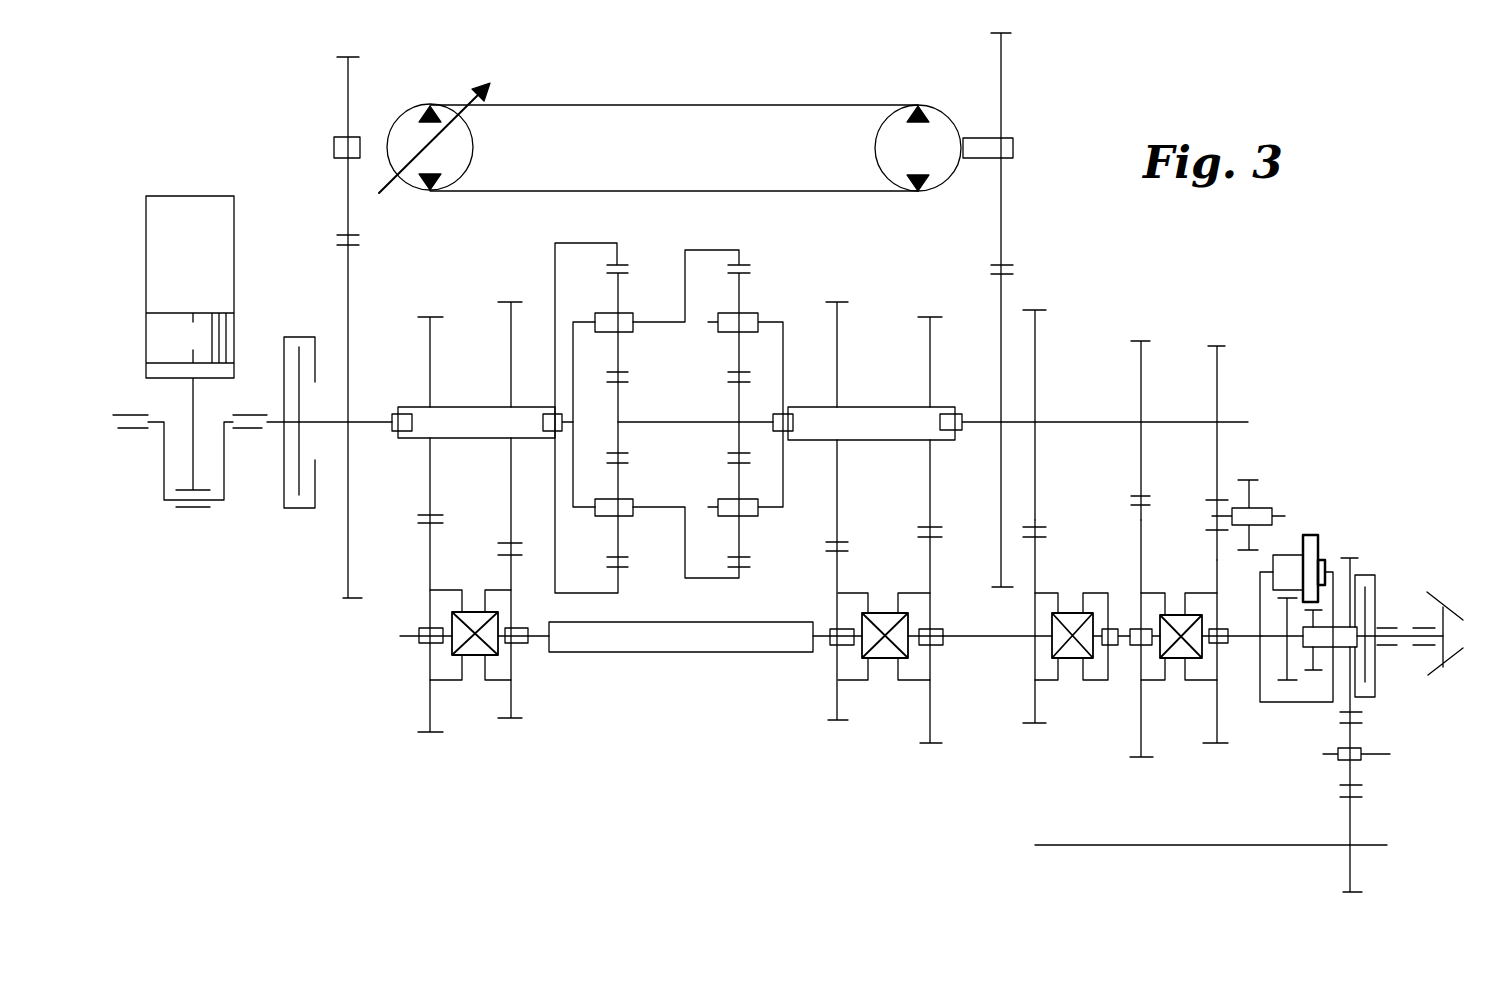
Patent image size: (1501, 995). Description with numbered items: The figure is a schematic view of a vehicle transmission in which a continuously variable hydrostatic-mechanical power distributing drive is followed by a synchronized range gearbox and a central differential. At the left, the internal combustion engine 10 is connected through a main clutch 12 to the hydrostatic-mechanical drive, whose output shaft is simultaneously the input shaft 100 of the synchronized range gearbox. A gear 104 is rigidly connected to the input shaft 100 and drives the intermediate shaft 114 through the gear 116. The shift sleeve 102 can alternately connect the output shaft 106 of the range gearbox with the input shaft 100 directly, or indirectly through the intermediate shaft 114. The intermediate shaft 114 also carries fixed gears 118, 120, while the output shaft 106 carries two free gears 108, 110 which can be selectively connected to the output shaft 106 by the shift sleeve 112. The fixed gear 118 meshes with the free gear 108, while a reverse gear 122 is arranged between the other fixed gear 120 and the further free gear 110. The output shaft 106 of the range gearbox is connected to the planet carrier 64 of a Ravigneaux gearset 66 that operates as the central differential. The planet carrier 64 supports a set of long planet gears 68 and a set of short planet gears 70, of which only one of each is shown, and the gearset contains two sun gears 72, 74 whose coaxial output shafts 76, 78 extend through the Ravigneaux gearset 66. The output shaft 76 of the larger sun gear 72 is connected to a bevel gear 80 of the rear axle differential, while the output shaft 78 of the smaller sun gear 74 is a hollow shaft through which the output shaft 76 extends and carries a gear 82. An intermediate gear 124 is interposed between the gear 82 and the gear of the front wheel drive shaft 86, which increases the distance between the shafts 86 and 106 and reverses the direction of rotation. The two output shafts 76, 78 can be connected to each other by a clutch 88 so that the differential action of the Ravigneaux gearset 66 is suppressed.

The internal combustion engine 10 is at (196, 208).
The main clutch 12 is at (307, 498).
The planet carrier 64 is at (1322, 700).
The Ravigneaux gearset 66 is at (1340, 533).
The long planet gear 68 is at (1282, 580).
The short planet gear 70 is at (1313, 535).
The larger sun gear 72 is at (1286, 657).
The smaller sun gear 74 is at (1300, 698).
The output shaft 76 is at (1406, 642).
The output shaft 78 is at (1366, 598).
The bevel gear 80 is at (1445, 672).
The gear 82 is at (1352, 573).
The front wheel drive shaft 86 is at (1163, 848).
The clutch 88 is at (1367, 688).
The input shaft 100 is at (1013, 640).
The shift sleeve 102 is at (1072, 660).
The gear 104 is at (1035, 705).
The output shaft 106 is at (1241, 645).
The free gear 108 is at (1141, 727).
The free gear 110 is at (1217, 722).
The shift sleeve 112 is at (1175, 660).
The intermediate shaft 114 is at (1230, 422).
The gear 116 is at (1035, 327).
The fixed gear 118 is at (1141, 378).
The fixed gear 120 is at (1226, 357).
The reverse gear 122 is at (1255, 489).
The intermediate gear 124 is at (1355, 778).